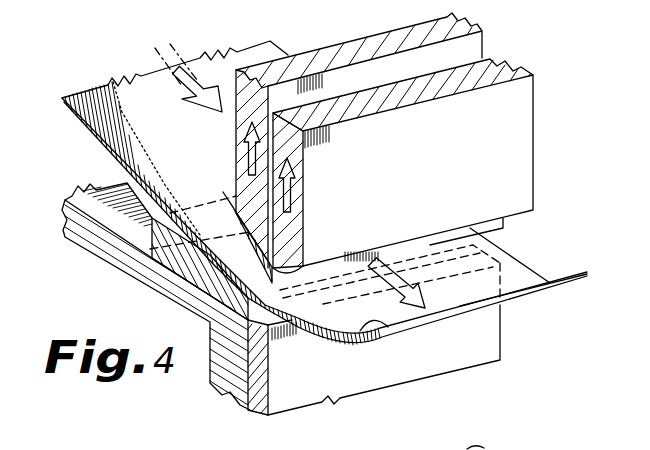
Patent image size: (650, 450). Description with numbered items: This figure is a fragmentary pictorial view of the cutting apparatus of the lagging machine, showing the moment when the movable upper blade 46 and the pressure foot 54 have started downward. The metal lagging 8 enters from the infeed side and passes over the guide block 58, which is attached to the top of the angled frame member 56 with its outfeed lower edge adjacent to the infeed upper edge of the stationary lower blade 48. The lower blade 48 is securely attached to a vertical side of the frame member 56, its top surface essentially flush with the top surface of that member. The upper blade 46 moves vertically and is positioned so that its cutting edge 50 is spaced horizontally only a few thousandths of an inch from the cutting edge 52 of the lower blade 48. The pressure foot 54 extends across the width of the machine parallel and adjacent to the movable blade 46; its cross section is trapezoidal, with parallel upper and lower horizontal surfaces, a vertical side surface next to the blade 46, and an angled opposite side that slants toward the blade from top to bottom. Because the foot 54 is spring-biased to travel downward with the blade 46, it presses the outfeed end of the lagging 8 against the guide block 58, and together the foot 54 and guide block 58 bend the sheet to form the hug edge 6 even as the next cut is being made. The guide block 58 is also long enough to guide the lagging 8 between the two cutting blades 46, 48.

The metal lagging 8 is at (171, 120).
The hug edge 6 is at (390, 326).
The movable upper blade 46 is at (430, 176).
The stationary lower blade 48 is at (257, 408).
The cutting edge 50 is at (309, 262).
The cutting edge 52 is at (273, 330).
The pressure foot 54 is at (246, 218).
The angled frame member 56 is at (160, 304).
The guide block 58 is at (148, 234).